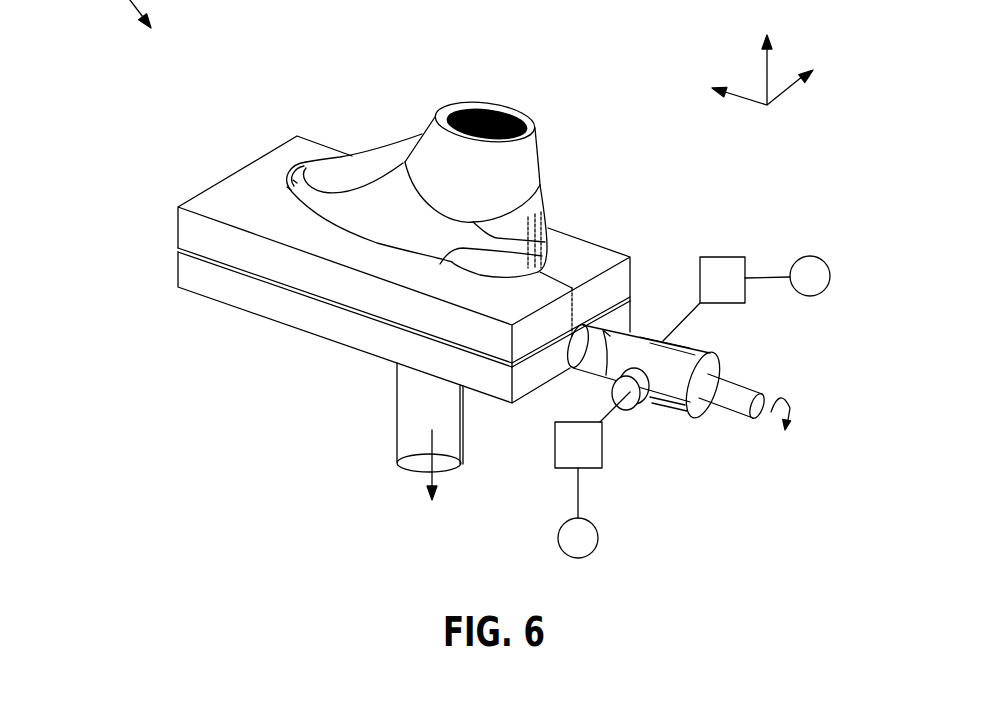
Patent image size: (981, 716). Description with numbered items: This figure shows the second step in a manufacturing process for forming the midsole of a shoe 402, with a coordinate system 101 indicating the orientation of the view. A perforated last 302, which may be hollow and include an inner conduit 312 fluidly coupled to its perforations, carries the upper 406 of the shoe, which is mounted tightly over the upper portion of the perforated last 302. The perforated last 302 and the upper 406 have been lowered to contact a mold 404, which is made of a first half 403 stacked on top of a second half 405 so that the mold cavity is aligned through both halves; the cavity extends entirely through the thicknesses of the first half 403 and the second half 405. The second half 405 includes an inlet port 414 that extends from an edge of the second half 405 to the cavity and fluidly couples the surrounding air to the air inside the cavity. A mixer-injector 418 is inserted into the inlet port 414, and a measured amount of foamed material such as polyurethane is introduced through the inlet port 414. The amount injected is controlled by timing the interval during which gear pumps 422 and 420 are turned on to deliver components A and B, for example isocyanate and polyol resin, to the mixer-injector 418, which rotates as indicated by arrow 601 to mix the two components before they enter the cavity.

The coordinate system 101 is at (792, 40).
The perforated last 302 is at (508, 149).
The inner conduit 312 is at (493, 110).
The shoe 402 is at (280, 78).
The first half 403 is at (180, 232).
The mold 404 is at (172, 179).
The second half 405 is at (213, 287).
The upper 406 is at (378, 128).
The inlet port 414 is at (573, 333).
The mixer-injector 418 is at (705, 410).
The gear pump 420 is at (746, 303).
The gear pump 422 is at (598, 455).
The arrow 601 is at (788, 403).